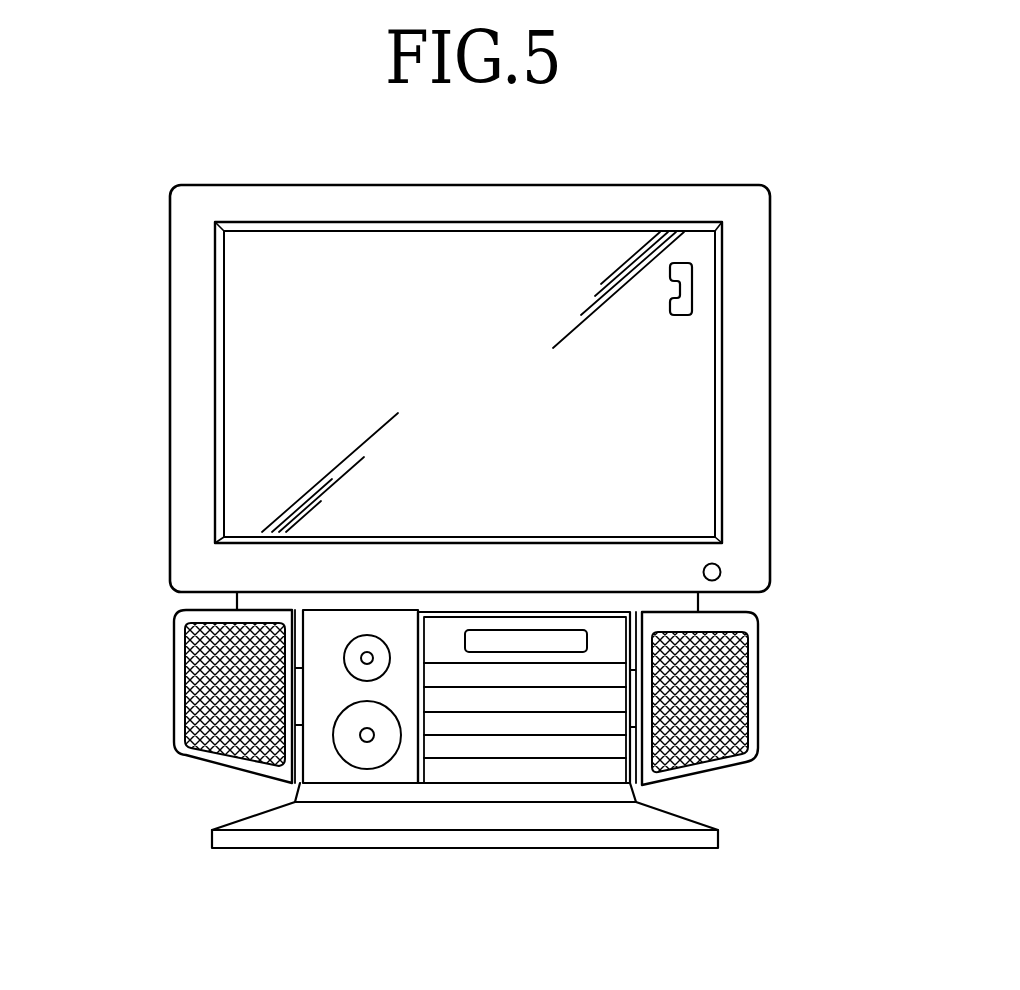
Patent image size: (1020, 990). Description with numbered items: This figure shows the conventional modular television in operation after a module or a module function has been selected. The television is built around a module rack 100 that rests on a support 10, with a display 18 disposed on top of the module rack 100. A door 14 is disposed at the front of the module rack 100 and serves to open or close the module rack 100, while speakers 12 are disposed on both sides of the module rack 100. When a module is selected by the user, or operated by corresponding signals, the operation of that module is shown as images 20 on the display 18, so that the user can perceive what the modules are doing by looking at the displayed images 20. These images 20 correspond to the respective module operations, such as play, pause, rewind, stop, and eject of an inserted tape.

The support 10 is at (315, 820).
The speakers 12 is at (197, 672).
The door 14 is at (262, 708).
The display 18 is at (673, 452).
The images 20 is at (692, 285).
The module rack 100 is at (532, 768).